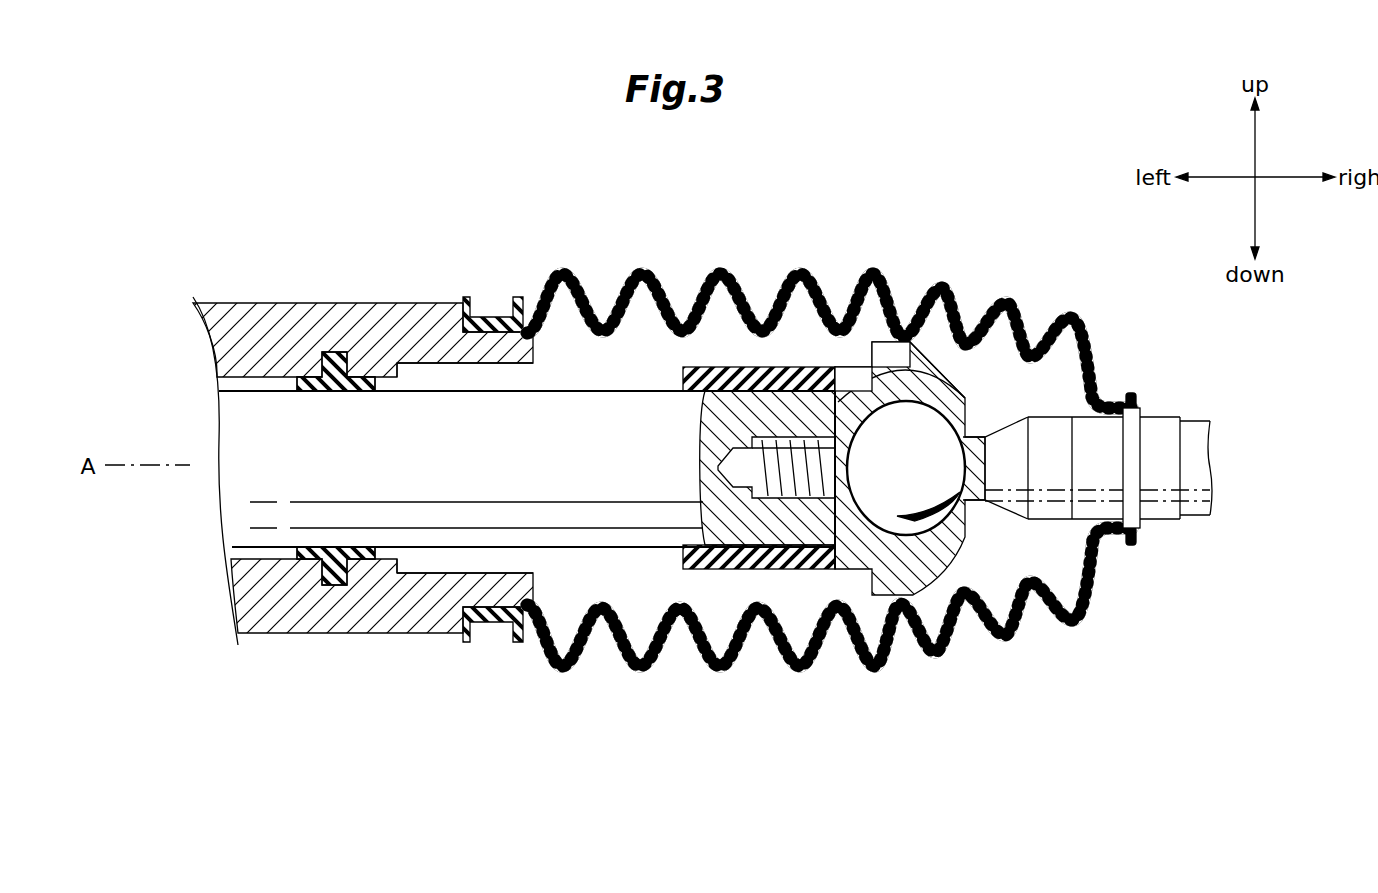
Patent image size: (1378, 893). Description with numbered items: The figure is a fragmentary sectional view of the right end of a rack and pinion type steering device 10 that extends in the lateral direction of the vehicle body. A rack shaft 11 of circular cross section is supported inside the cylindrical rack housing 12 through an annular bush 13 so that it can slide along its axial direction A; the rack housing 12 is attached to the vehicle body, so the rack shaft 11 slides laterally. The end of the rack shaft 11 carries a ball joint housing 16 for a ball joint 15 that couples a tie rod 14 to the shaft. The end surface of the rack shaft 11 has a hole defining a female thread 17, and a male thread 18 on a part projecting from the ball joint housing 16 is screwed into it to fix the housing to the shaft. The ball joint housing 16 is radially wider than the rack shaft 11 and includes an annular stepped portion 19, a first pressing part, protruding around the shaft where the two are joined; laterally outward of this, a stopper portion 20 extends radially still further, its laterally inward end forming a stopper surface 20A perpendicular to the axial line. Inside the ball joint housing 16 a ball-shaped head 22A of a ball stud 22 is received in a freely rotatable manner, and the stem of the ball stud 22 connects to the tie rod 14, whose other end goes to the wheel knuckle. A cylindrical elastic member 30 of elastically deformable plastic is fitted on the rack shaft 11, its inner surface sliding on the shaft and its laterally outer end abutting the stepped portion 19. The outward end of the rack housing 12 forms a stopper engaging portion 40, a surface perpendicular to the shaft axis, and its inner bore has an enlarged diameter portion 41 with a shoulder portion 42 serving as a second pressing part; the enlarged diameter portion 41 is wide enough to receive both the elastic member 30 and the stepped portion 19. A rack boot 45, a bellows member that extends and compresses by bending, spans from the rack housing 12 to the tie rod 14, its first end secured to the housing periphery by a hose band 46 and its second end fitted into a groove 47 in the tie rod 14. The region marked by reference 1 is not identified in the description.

The ball joint 1 is at (700, 353).
The rack and pinion type steering device 10 is at (559, 207).
The rack shaft 11 is at (588, 405).
The rack housing 12 is at (265, 320).
The annular bush 13 is at (335, 348).
The tie rod 14 is at (1155, 427).
The ball joint 15 is at (991, 408).
The ball joint housing 16 is at (931, 343).
The female thread 17 is at (812, 490).
The male thread 18 is at (758, 485).
The stepped portion 19 is at (843, 377).
The stopper portion 20 is at (892, 348).
The stopper surface 20A is at (866, 355).
The ball stud 22 is at (1003, 480).
The ball-shaped head 22A is at (912, 490).
The elastic member 30 is at (748, 366).
The stopper engaging portion 40 is at (530, 333).
The enlarged diameter portion 41 is at (428, 367).
The shoulder portion 42 is at (410, 365).
The rack boot 45 is at (643, 668).
The hose band 46 is at (492, 628).
The groove 47 is at (1133, 465).